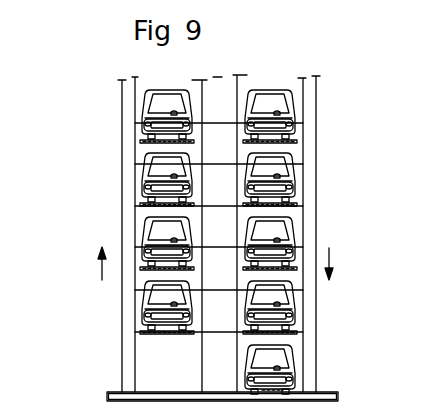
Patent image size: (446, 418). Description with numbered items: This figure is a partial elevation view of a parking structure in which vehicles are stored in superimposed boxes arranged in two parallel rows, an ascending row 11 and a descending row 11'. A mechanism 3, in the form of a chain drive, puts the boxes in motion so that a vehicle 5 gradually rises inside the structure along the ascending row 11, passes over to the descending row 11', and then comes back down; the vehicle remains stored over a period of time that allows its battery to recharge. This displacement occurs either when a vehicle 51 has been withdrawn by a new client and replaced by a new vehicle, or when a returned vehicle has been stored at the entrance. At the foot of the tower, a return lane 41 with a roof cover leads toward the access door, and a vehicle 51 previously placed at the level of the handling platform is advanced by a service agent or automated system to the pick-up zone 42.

The mechanism 3 is at (238, 87).
The ascending row 11 is at (125, 234).
The descending row 11' is at (315, 234).
The vehicle 5 is at (153, 320).
The return lane 41 is at (157, 392).
The pick-up zone 42 is at (299, 390).
The vehicle 51 is at (293, 362).